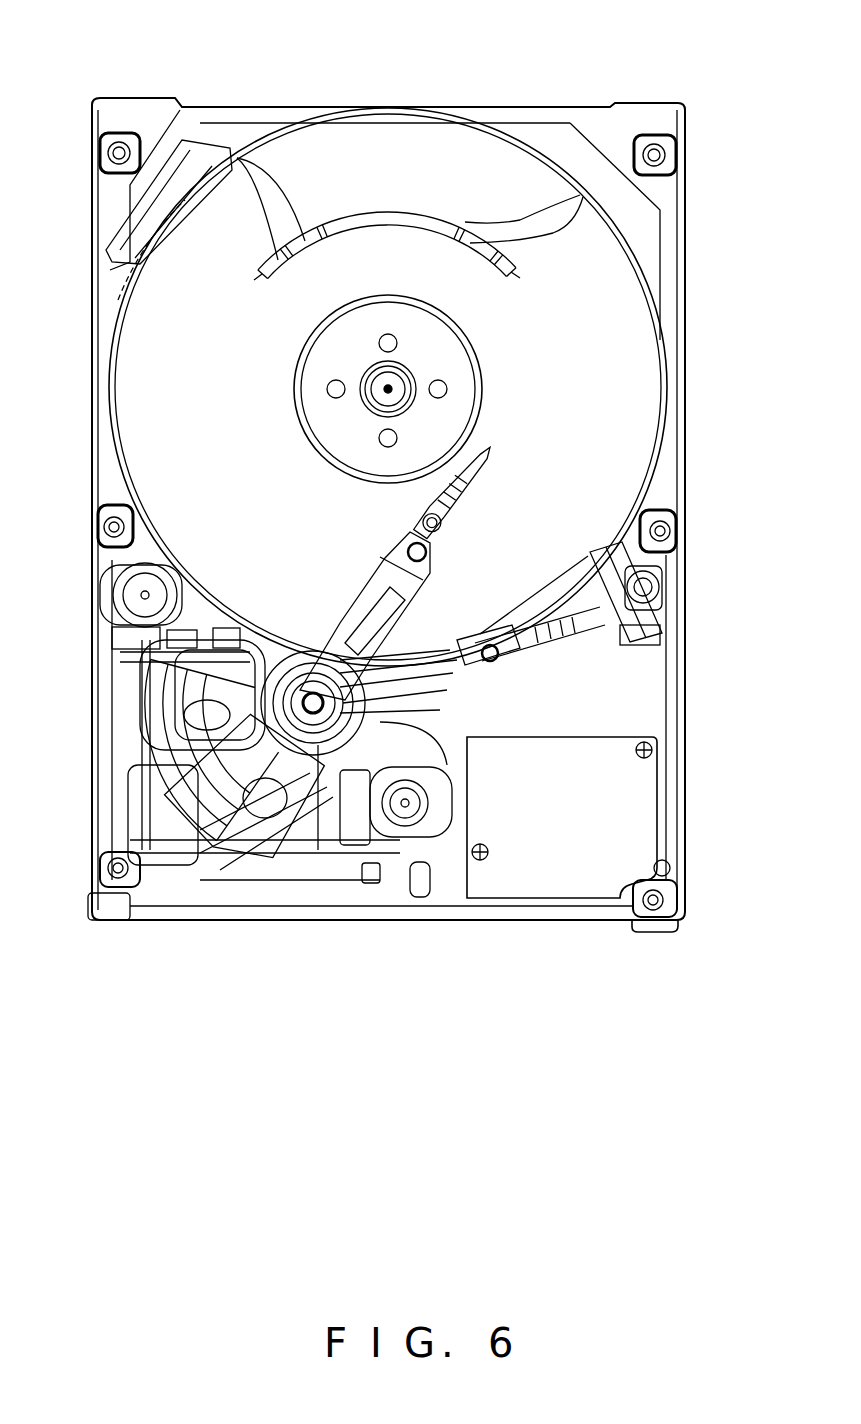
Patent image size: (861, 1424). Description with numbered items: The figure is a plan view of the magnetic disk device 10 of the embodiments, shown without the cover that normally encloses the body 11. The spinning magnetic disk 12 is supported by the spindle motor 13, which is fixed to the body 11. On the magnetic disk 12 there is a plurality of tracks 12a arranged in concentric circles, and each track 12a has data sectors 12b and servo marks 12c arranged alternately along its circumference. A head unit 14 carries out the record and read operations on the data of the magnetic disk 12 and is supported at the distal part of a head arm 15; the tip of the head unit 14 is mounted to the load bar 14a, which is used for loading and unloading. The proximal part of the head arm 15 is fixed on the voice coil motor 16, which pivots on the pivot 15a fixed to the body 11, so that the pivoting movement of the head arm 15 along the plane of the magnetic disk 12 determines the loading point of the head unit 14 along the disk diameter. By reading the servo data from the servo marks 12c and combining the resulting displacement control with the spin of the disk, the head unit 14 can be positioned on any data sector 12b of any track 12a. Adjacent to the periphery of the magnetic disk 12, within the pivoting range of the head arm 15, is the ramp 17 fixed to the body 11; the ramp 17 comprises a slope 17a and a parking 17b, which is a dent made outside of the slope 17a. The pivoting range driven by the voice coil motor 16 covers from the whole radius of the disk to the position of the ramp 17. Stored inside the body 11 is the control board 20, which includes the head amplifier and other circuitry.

The magnetic disk device 10 is at (664, 96).
The body 11 is at (257, 105).
The magnetic disk 12 is at (470, 165).
The tracks 12a is at (382, 175).
The data sectors 12b is at (580, 195).
The servo marks 12c is at (227, 167).
The spindle motor 13 is at (362, 380).
The head unit 14 is at (493, 465).
The load bar 14a is at (493, 449).
The head arm 15 is at (433, 510).
The pivot 15a is at (360, 852).
The voice coil motor 16 is at (168, 735).
The ramp 17 is at (660, 628).
The slope 17a is at (665, 568).
The parking 17b is at (633, 620).
The control board 20 is at (617, 812).